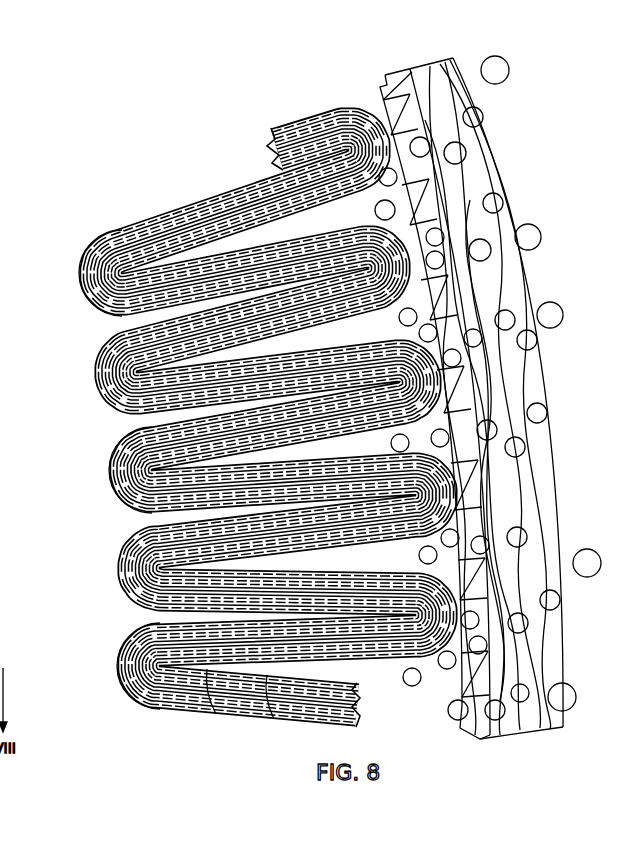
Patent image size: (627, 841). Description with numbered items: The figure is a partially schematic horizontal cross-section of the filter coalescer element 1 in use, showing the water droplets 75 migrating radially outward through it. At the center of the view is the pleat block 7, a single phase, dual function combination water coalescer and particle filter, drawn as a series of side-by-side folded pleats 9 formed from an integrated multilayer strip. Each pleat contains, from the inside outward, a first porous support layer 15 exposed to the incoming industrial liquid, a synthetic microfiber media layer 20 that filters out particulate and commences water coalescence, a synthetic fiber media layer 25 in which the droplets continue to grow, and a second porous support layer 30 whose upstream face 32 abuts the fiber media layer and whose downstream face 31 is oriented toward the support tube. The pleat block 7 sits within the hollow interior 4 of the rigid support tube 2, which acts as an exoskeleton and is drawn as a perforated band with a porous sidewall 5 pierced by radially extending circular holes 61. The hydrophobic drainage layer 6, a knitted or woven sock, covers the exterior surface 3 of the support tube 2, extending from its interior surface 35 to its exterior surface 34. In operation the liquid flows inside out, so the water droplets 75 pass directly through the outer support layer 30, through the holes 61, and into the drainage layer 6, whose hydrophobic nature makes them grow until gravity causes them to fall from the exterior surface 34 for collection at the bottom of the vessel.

The filter coalescer element 1 is at (306, 404).
The support tube 2 is at (306, 404).
The exterior surface 3 is at (439, 100).
The hollow interior 4 is at (380, 102).
The porous sidewall 5 is at (396, 70).
The hydrophobic drainage layer 6 is at (306, 415).
The pleat block 7 is at (233, 419).
The pleats 9 is at (79, 282).
The first porous support layer 15 is at (111, 653).
The synthetic microfiber media layer 20 is at (126, 702).
The synthetic fiber media layer 25 is at (208, 719).
The second porous support layer 30 is at (268, 722).
The downstream face 31 is at (318, 104).
The upstream face 32 is at (268, 128).
The exterior surface 34 is at (551, 425).
The interior surface 35 is at (477, 738).
The holes 61 is at (514, 210).
The water droplets 75 is at (509, 66).